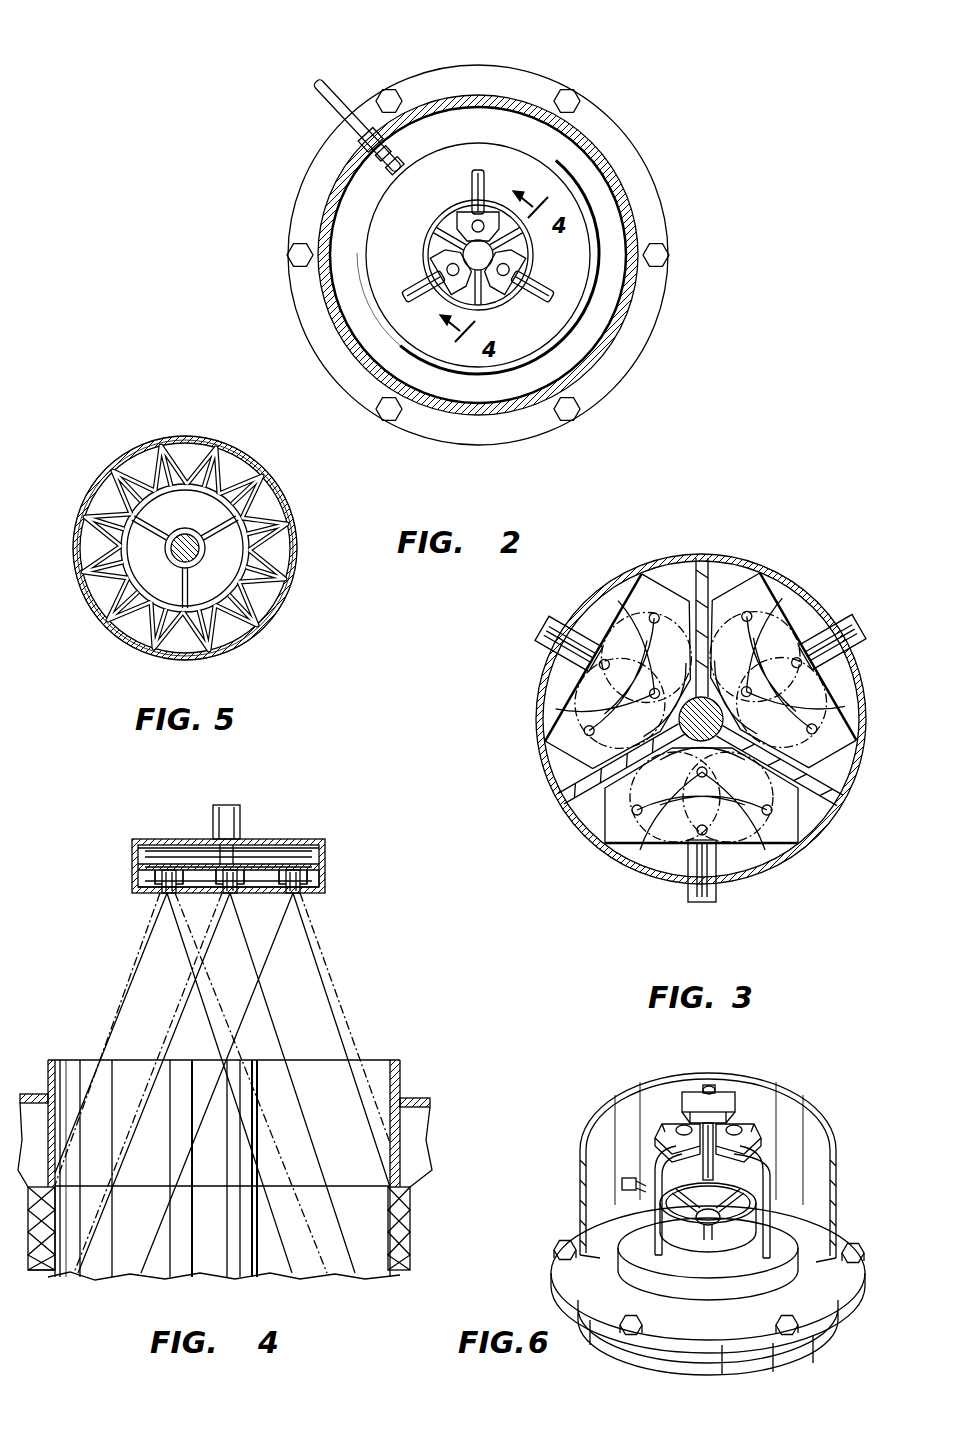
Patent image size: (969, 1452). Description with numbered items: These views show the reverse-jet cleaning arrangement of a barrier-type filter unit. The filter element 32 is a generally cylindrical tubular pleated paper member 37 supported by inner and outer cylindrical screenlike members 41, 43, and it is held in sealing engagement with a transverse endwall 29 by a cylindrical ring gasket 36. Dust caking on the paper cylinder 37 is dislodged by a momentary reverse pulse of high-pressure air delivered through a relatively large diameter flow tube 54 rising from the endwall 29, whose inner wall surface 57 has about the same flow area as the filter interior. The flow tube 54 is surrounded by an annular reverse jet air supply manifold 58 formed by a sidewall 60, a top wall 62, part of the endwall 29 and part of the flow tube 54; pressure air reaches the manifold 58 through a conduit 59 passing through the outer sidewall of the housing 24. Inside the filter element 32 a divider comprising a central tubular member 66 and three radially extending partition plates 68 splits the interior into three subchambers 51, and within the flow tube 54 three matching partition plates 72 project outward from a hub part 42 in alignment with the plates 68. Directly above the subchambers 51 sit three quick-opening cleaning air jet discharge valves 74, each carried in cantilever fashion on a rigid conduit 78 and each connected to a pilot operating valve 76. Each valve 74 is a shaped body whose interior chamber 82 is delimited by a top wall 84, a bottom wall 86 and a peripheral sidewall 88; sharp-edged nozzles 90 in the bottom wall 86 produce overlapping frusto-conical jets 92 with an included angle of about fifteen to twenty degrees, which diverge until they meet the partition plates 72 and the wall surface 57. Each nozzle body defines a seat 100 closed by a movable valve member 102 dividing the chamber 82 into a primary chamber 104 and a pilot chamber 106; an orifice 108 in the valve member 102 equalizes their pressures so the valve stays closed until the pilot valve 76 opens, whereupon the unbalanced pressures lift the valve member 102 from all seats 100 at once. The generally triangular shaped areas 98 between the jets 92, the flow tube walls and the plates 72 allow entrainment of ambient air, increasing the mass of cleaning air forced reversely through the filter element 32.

In FIG. 2, the housing 24 is at (478, 93).
In FIG. 6, the housing 24 is at (580, 1152).
In FIG. 4, the transverse endwall 29 is at (410, 1162).
In FIG. 6, the transverse endwall 29 is at (866, 1278).
In FIG. 5, the filter element 32 is at (106, 646).
In FIG. 4, the filter element 32 is at (444, 1246).
In FIG. 4, the cylindrical ring gasket 36 is at (415, 1202).
In FIG. 5, the pleated paper member 37 is at (280, 496).
In FIG. 5, the inner cylindrical screenlike member 41 is at (78, 556).
In FIG. 4, the inner cylindrical screenlike member 41 is at (62, 1280).
In FIG. 2, the hub part 42 is at (540, 362).
In FIG. 3, the hub part 42 is at (845, 668).
In FIG. 4, the hub part 42 is at (265, 1066).
In FIG. 6, the hub part 42 is at (708, 1262).
In FIG. 5, the outer cylindrical screenlike member 43 is at (270, 624).
In FIG. 2, the subchambers 51 is at (455, 232).
In FIG. 5, the subchambers 51 is at (200, 531).
In FIG. 2, the flow tube 54 is at (412, 95).
In FIG. 3, the flow tube 54 is at (585, 848).
In FIG. 4, the flow tube 54 is at (405, 1078).
In FIG. 6, the flow tube 54 is at (785, 1282).
In FIG. 2, the inner wall surface 57 is at (560, 372).
In FIG. 2, the reverse jet air supply manifold 58 is at (574, 158).
In FIG. 6, the reverse jet air supply manifold 58 is at (572, 1228).
In FIG. 2, the conduit 59 is at (340, 82).
In FIG. 6, the sidewall 60 is at (838, 1232).
In FIG. 2, the top wall 62 is at (350, 225).
In FIG. 5, the central tubular member 66 is at (266, 592).
In FIG. 4, the central tubular member 66 is at (258, 1280).
In FIG. 5, the partition plates 68 is at (218, 458).
In FIG. 4, the partition plates 68 is at (100, 1280).
In FIG. 2, the partition plates 72 is at (590, 168).
In FIG. 3, the partition plates 72 is at (720, 560).
In FIG. 4, the partition plates 72 is at (158, 1044).
In FIG. 6, the partition plates 72 is at (704, 1262).
In FIG. 2, the cleaning air jet discharge valves 74 is at (452, 210).
In FIG. 3, the cleaning air jet discharge valves 74 is at (655, 600).
In FIG. 4, the cleaning air jet discharge valves 74 is at (302, 833).
In FIG. 6, the cleaning air jet discharge valves 74 is at (662, 1125).
In FIG. 2, the pilot operating valve 76 is at (488, 215).
In FIG. 4, the pilot operating valve 76 is at (226, 805).
In FIG. 6, the pilot operating valve 76 is at (708, 1085).
In FIG. 6, the conduits 78 is at (722, 1092).
In FIG. 4, the interior chamber 82 is at (322, 870).
In FIG. 4, the top wall 84 is at (190, 845).
In FIG. 4, the bottom wall 86 is at (135, 888).
In FIG. 4, the peripheral sidewall 88 is at (135, 865).
In FIG. 3, the nozzles 90 is at (645, 616).
In FIG. 4, the nozzles 90 is at (295, 893).
In FIG. 3, the jets 92 is at (825, 842).
In FIG. 4, the jets 92 is at (122, 968).
In FIG. 3, the triangular shaped areas 98 is at (840, 735).
In FIG. 4, the triangular shaped areas 98 is at (70, 1062).
In FIG. 4, the seat 100 is at (213, 840).
In FIG. 4, the valve member 102 is at (135, 850).
In FIG. 4, the primary chamber 104 is at (318, 876).
In FIG. 4, the pilot chamber 106 is at (246, 840).
In FIG. 4, the orifice 108 is at (175, 845).